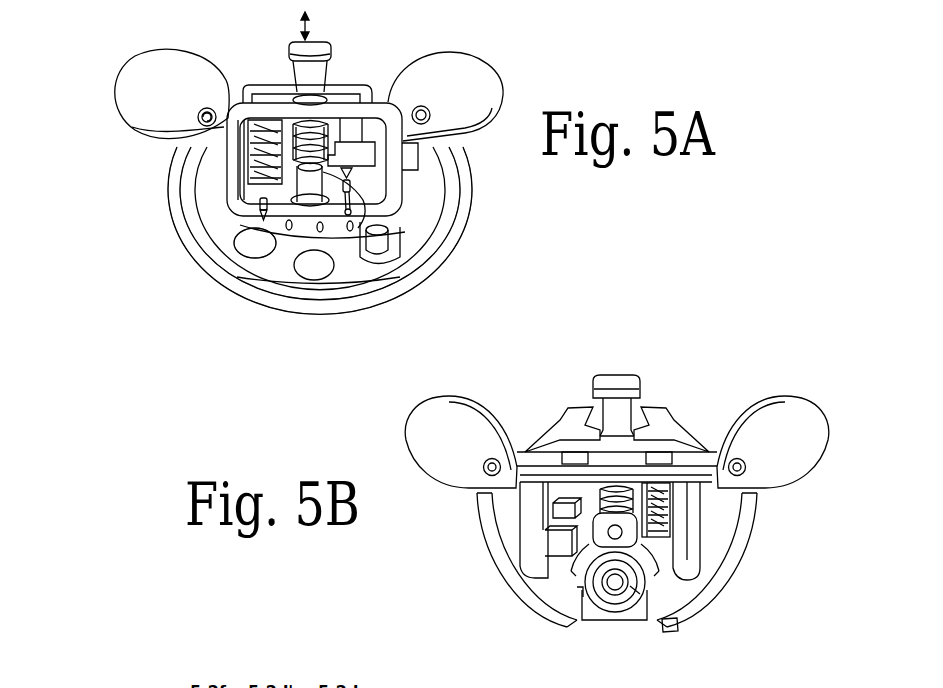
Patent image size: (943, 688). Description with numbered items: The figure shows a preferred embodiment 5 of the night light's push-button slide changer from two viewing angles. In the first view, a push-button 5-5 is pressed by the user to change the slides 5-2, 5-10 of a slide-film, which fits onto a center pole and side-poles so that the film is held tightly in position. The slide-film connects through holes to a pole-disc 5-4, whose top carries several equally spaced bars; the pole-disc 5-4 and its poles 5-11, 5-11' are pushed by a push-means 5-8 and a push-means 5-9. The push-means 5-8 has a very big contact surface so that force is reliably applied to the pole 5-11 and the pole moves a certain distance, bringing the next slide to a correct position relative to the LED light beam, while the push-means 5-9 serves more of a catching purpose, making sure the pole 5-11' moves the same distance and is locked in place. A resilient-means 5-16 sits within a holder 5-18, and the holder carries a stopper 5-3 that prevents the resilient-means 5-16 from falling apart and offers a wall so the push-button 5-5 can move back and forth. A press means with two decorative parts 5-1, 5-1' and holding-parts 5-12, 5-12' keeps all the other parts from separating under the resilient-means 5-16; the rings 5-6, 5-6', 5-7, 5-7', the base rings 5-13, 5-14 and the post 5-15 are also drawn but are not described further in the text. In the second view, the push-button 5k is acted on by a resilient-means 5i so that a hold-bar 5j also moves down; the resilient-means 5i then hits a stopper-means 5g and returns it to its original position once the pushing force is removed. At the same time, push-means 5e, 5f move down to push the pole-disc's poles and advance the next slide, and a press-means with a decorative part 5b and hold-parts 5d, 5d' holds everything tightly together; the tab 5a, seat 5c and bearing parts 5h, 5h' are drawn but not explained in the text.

In FIG. 5A, the preferred embodiment 5 is at (183, 253).
In FIG. 5A, the decorative part 5-1 is at (495, 91).
In FIG. 5A, the decorative part 5-1' is at (169, 82).
In FIG. 5A, the slide 5-2 is at (255, 252).
In FIG. 5A, the stopper 5-3 is at (306, 198).
In FIG. 5A, the pole-disc 5-4 is at (336, 224).
In FIG. 5A, the push-button 5-5 is at (313, 45).
In FIG. 5A, the right ring 5-6 is at (461, 62).
In FIG. 5A, the left ring 5-6' is at (124, 79).
In FIG. 5A, the right ring hole 5-7 is at (478, 74).
In FIG. 5A, the left ring hole 5-7' is at (122, 119).
In FIG. 5A, the push-means 5-8 is at (362, 170).
In FIG. 5A, the push-means 5-9 is at (236, 190).
In FIG. 5A, the slide 5-10 is at (382, 257).
In FIG. 5A, the pole 5-11 is at (384, 278).
In FIG. 5A, the pole 5-11' is at (237, 287).
In FIG. 5A, the holding-part 5-12 is at (387, 150).
In FIG. 5A, the holding-part 5-12' is at (155, 162).
In FIG. 5A, the middle ring 5-13 is at (212, 220).
In FIG. 5A, the outer ring 5-14 is at (440, 252).
In FIG. 5A, the post 5-15 is at (391, 232).
In FIG. 5A, the resilient-means 5-16 is at (303, 116).
In FIG. 5A, the holder 5-18 is at (318, 128).
In FIG. 5B, the tab 5a is at (673, 632).
In FIG. 5B, the decorative part 5b is at (426, 413).
In FIG. 5B, the bearing seat 5c is at (640, 594).
In FIG. 5B, the hold-part 5d is at (727, 554).
In FIG. 5B, the hold-part 5d' is at (507, 554).
In FIG. 5B, the push-means 5e is at (652, 532).
In FIG. 5B, the push-means 5f is at (550, 514).
In FIG. 5B, the stopper-means 5g is at (607, 536).
In FIG. 5B, the bearing 5h is at (557, 602).
In FIG. 5B, the bearing cradle 5h' is at (589, 609).
In FIG. 5B, the resilient-means 5i is at (609, 493).
In FIG. 5B, the hold-bar 5j is at (621, 482).
In FIG. 5B, the push-button 5k is at (583, 380).